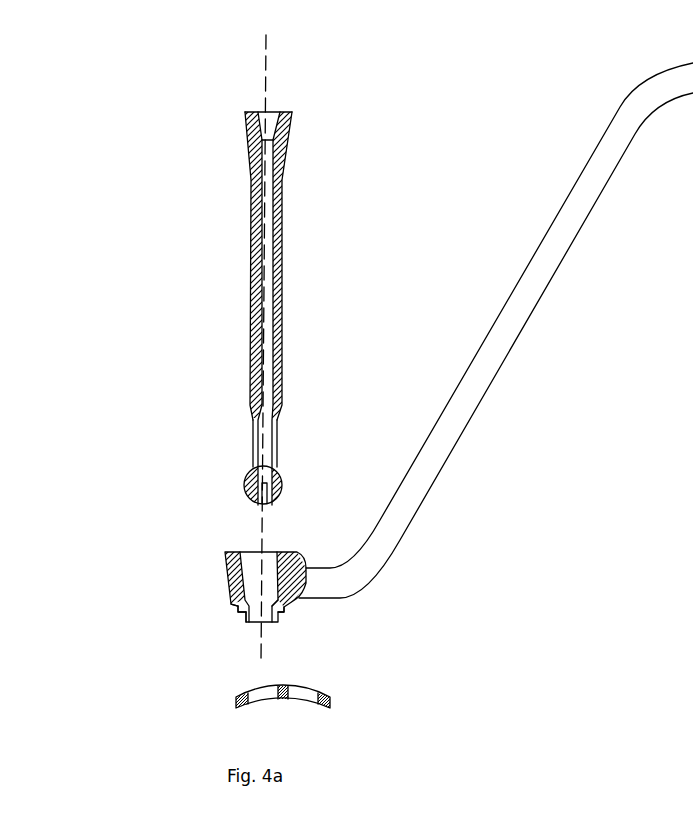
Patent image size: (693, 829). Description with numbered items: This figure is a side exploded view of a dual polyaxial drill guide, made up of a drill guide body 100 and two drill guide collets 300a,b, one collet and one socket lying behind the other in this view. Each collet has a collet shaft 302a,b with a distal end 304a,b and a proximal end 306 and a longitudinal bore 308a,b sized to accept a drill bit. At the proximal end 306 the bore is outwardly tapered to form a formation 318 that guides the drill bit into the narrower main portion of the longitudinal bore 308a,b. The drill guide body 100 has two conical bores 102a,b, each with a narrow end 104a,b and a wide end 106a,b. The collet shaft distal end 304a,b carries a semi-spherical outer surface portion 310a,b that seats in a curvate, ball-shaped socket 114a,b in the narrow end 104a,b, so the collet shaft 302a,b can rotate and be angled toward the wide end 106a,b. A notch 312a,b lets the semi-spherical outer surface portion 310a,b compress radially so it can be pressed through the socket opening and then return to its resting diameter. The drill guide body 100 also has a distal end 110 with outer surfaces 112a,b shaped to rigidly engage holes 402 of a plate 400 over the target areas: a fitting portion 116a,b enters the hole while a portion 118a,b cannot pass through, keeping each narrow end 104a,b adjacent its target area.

The drill guide collets 300a,b is at (258, 298).
The collet shaft 302a,b is at (285, 287).
The collet shaft proximal end 306 is at (303, 123).
The formation 318 is at (262, 120).
The longitudinal bore 308a,b is at (268, 330).
The collet shaft distal end 304a,b is at (302, 472).
The semi-spherical outer surface portion 310a,b is at (243, 483).
The notch 312a,b is at (258, 507).
The conical bore wide end 106a,b is at (292, 537).
The drill guide body 100 is at (243, 603).
The conical bores 102a,b is at (229, 587).
The conical bore narrow end 104a,b is at (275, 633).
The socket 114a,b is at (292, 600).
The distal end outer surfaces 112a,b is at (280, 612).
The non-fitting portion 118a,b is at (229, 605).
The distal end 110 is at (225, 618).
The fitting portion 116a,b is at (238, 621).
The plate 400 is at (296, 694).
The holes 402 is at (252, 685).